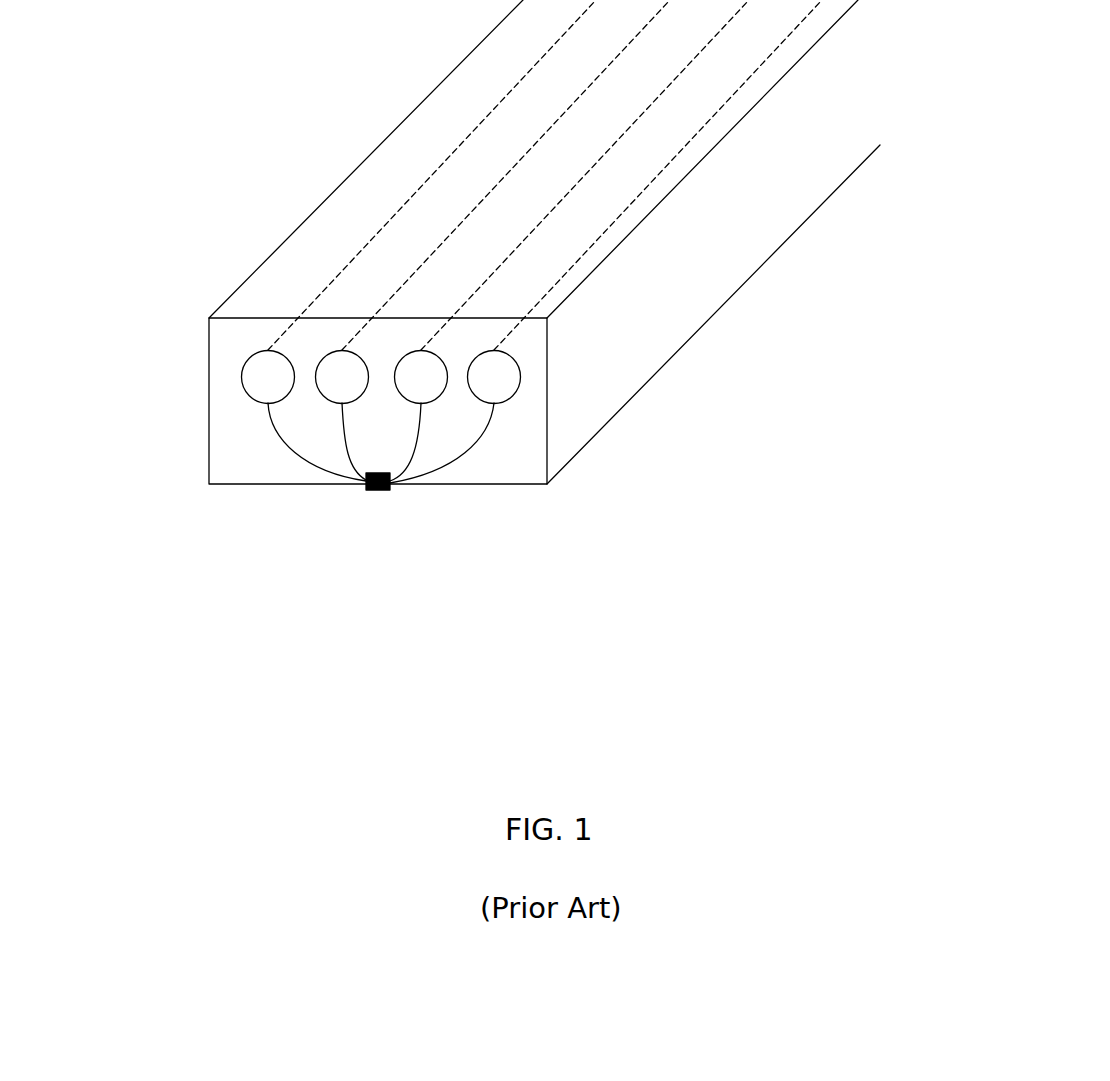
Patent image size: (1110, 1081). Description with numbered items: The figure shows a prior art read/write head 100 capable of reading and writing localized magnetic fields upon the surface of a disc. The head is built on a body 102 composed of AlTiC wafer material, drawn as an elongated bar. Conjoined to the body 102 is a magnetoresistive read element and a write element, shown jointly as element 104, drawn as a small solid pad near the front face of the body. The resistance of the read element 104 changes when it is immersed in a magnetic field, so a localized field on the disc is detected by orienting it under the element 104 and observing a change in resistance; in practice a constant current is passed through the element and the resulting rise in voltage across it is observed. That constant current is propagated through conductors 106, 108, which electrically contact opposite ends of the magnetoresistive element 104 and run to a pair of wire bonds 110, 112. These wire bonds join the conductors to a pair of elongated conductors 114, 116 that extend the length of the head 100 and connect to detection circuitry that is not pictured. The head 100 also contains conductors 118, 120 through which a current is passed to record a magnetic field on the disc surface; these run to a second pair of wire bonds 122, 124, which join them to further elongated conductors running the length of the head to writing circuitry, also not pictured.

The read/write head 100 is at (458, 396).
The body 102 is at (230, 347).
The magnetoresistive read element and write element 104 is at (377, 490).
The conductor 106 is at (283, 443).
The conductor 108 is at (345, 448).
The wire bond 110 is at (242, 380).
The wire bond 112 is at (316, 382).
The elongated conductor 114 is at (360, 252).
The elongated conductor 116 is at (470, 217).
The conductor 118 is at (417, 450).
The conductor 120 is at (470, 447).
The wire bond 122 is at (449, 381).
The wire bond 124 is at (522, 382).